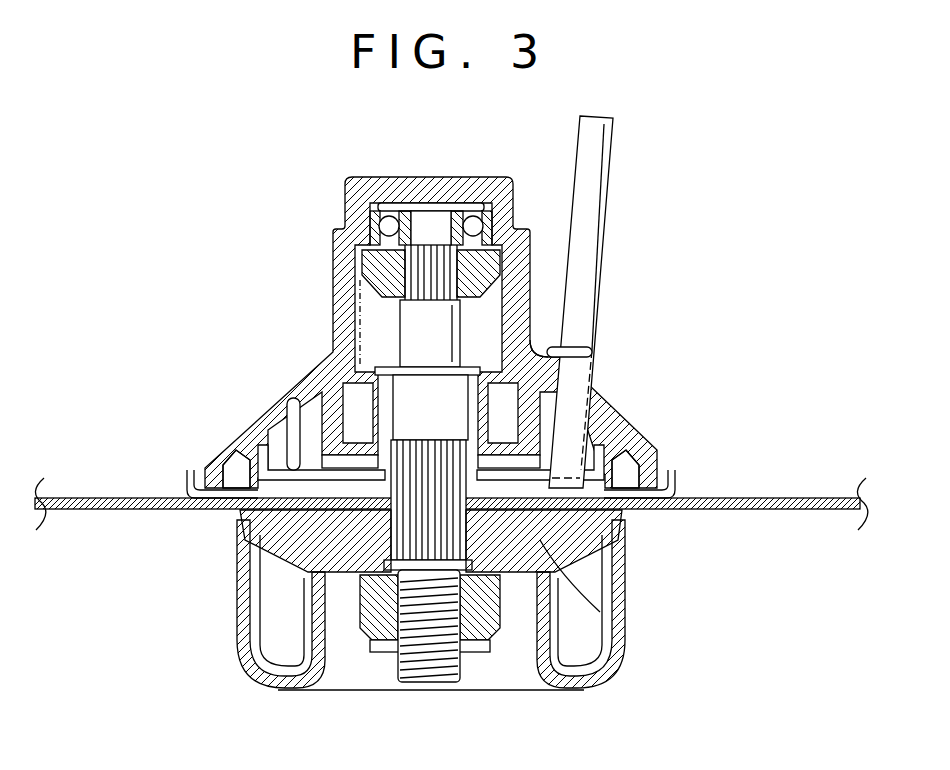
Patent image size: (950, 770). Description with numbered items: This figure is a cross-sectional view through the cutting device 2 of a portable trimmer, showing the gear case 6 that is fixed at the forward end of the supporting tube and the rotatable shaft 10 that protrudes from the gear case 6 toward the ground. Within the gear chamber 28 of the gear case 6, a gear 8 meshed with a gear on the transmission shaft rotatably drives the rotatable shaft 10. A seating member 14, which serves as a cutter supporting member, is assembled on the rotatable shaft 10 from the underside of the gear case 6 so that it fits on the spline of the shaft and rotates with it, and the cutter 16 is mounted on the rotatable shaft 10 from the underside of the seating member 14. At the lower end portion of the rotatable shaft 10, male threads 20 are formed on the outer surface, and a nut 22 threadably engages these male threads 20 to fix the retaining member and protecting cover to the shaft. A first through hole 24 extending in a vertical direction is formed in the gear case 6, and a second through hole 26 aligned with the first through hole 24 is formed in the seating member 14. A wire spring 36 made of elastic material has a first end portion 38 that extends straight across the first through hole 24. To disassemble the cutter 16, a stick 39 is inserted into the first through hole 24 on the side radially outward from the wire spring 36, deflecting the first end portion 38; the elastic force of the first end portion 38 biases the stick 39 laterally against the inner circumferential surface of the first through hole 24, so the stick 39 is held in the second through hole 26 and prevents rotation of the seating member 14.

The cutting device 2 is at (278, 178).
The gear case 6 is at (655, 442).
The gear 8 is at (373, 267).
The rotatable shaft 10 is at (388, 341).
The seating member 14 is at (542, 540).
The cutter 16 is at (106, 498).
The male threads 20 is at (418, 660).
The nut 22 is at (346, 650).
The first through hole 24 is at (572, 420).
The second through hole 26 is at (540, 536).
The gear chamber 28 is at (380, 313).
The wire spring 36 is at (547, 340).
The first end portion 38 is at (588, 352).
The stick 39 is at (590, 158).